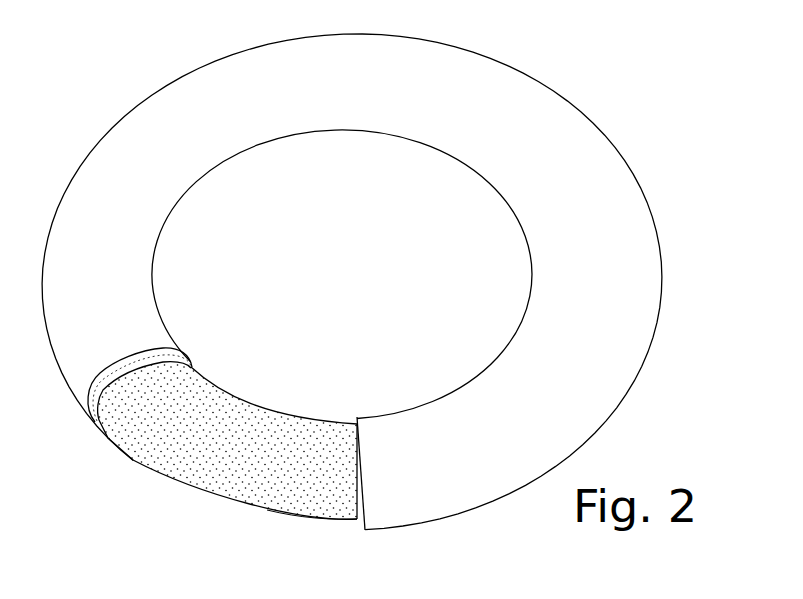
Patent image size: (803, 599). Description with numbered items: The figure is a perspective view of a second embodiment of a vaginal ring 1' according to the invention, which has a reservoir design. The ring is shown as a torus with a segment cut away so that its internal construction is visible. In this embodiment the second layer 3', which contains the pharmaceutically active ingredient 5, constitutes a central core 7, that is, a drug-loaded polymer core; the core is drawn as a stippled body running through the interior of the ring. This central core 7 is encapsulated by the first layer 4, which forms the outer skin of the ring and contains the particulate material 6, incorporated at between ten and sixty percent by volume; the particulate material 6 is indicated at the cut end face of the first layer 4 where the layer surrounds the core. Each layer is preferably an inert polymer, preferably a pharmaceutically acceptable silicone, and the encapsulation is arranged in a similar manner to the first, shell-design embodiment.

The vaginal ring 1' is at (403, 280).
The second layer 3' is at (312, 533).
The first layer 4 is at (610, 328).
The pharmaceutically active ingredient 5 is at (133, 427).
The particulate material 6 is at (188, 358).
The central core 7 is at (237, 485).